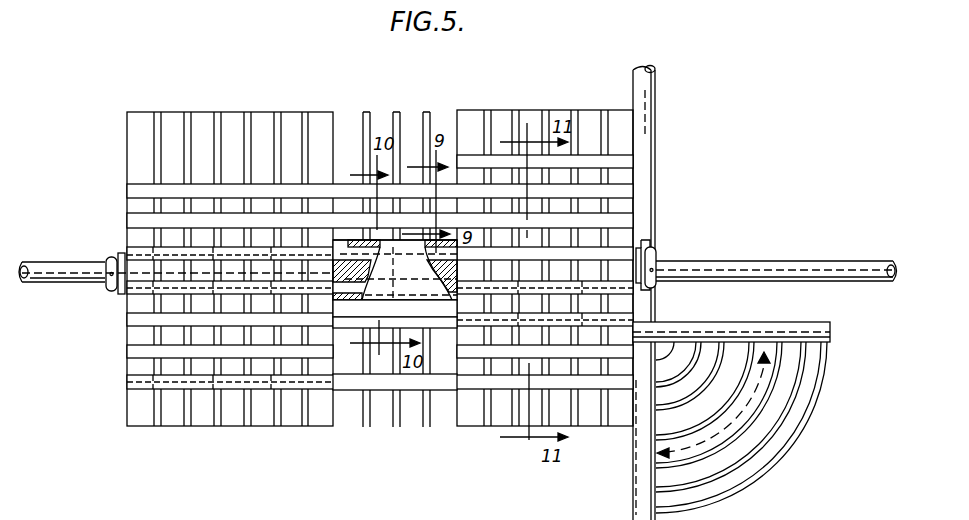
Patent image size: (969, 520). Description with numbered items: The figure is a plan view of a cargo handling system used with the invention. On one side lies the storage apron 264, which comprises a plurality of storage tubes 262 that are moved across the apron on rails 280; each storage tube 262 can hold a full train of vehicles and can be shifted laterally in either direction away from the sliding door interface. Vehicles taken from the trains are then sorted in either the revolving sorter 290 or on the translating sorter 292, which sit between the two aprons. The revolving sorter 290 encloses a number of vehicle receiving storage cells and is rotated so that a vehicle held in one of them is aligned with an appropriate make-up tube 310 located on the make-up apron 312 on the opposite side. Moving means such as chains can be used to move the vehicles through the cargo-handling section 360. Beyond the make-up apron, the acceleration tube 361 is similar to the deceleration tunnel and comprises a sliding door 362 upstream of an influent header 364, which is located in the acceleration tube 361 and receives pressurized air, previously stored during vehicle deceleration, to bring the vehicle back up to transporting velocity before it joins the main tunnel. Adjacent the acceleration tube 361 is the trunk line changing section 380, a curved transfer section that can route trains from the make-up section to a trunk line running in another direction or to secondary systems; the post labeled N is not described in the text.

The storage tube 262 is at (166, 194).
The storage apron 264 is at (230, 226).
The rails 280 is at (277, 121).
The revolving sorter 290 is at (342, 230).
The translating sorter 292 is at (366, 382).
The make-up tube 310 is at (469, 161).
The make-up apron 312 is at (541, 97).
The cargo-handling section 360 is at (441, 93).
The acceleration tube 361 is at (735, 268).
The sliding door 362 is at (650, 243).
The influent header 364 is at (656, 258).
The trunk line changing section 380 is at (798, 458).
The post N is at (644, 280).